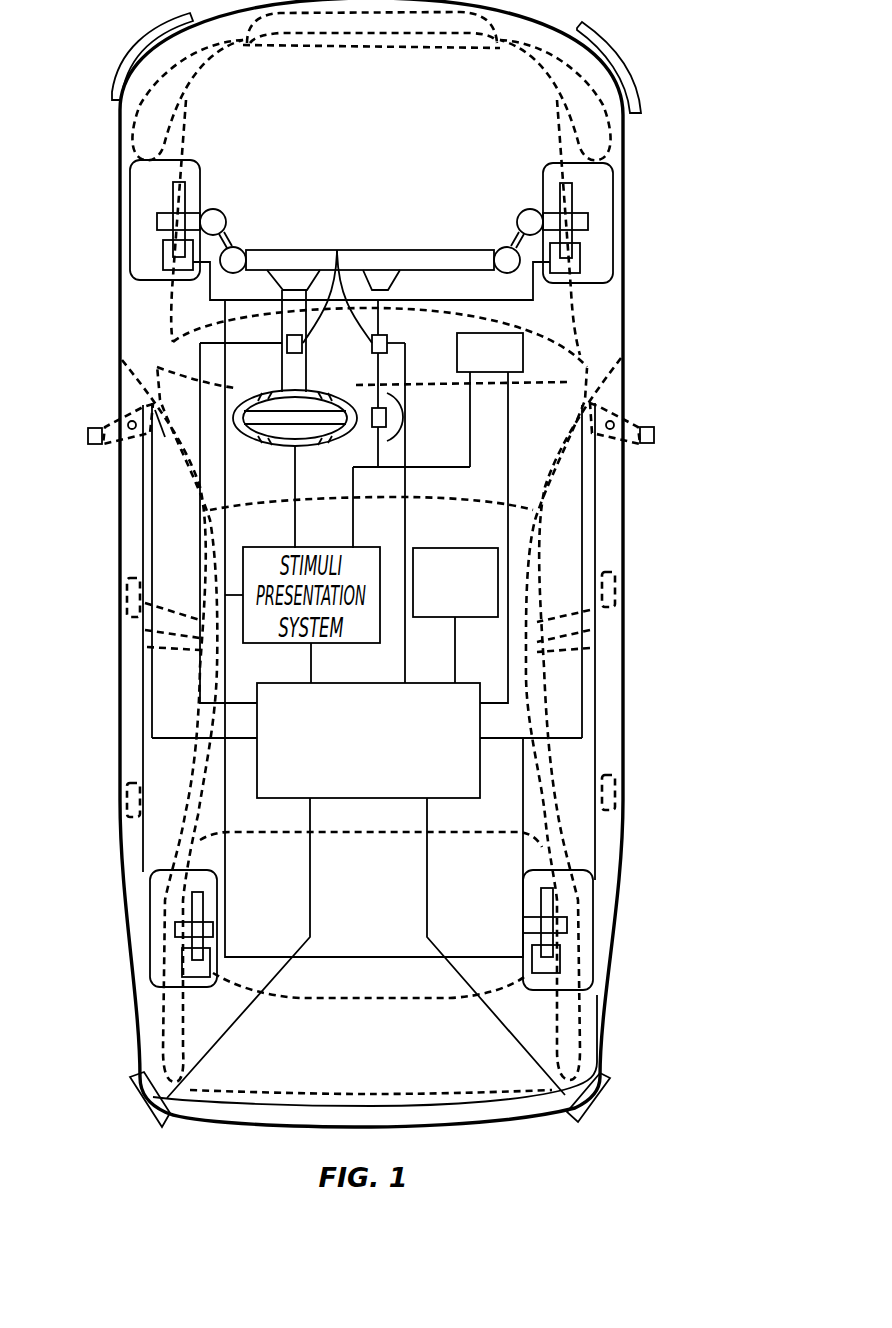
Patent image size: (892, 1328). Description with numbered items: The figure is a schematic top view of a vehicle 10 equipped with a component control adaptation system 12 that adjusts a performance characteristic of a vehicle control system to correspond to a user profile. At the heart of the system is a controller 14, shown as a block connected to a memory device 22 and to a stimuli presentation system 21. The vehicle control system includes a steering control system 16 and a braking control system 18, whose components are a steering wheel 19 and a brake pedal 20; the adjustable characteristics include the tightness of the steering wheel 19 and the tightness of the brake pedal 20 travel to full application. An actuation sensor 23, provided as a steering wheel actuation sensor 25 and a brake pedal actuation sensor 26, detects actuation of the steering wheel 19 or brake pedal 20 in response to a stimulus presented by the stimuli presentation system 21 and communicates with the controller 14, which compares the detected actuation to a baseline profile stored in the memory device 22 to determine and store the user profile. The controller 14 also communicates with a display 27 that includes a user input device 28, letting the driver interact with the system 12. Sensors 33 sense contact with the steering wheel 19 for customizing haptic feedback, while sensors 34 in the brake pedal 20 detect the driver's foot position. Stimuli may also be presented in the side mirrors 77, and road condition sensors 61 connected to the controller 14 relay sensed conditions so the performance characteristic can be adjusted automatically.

The vehicle 10 is at (680, 154).
The component control adaptation system 12 is at (532, 449).
The controller 14 is at (492, 769).
The steering control system 16 is at (222, 414).
The braking control system 18 is at (396, 416).
The steering wheel 19 is at (262, 385).
The brake pedal 20 is at (408, 388).
The stimuli presentation system 21 is at (243, 620).
The memory device 22 is at (498, 583).
The actuation sensor 23 is at (337, 250).
The steering wheel actuation sensor 25 is at (291, 335).
The brake pedal actuation sensor 26 is at (390, 295).
The display 27 is at (523, 345).
The user input device 28 is at (523, 360).
The sensors 33 is at (263, 450).
The sensors 34 is at (383, 440).
The sensors 61 is at (143, 1098).
The side mirrors 77 is at (105, 420).